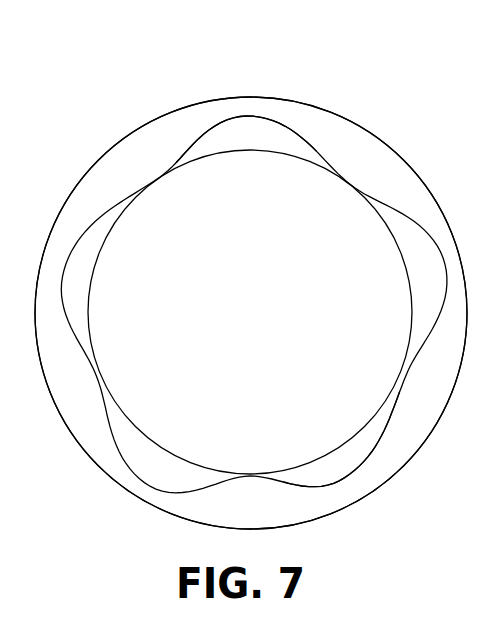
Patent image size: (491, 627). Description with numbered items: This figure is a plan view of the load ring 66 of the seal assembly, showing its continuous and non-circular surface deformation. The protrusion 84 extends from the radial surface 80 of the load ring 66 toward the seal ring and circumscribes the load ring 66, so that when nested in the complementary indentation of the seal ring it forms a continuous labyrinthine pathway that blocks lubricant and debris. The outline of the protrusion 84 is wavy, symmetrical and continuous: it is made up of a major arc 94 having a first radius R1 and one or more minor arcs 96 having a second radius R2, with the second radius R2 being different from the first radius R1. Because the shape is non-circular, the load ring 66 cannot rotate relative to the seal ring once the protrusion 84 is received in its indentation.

The load ring 66 is at (375, 97).
The radial surface 80 is at (171, 125).
The protrusion 84 is at (152, 487).
The major arc 94 is at (258, 116).
The minor arc 96 is at (402, 398).
The first radius R1 is at (66, 258).
The second radius R2 is at (160, 176).